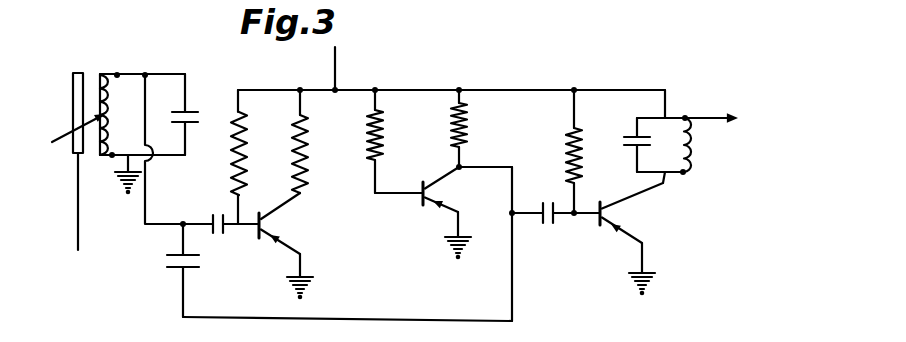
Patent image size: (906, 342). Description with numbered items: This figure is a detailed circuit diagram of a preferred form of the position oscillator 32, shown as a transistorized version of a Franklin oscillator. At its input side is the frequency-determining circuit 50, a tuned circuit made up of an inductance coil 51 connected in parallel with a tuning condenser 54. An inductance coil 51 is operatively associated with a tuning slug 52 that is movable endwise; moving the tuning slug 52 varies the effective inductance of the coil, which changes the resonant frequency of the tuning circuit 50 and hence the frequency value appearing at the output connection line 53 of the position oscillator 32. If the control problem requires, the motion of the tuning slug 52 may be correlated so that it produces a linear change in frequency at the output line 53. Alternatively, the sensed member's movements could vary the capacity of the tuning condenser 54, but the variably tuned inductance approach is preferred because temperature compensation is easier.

The position oscillator 32 is at (441, 184).
The frequency-determining circuit 50 is at (159, 107).
The inductance coil 51 is at (98, 72).
The tuning slug 52 is at (77, 93).
The output connection line 53 is at (708, 112).
The tuning condenser 54 is at (200, 118).